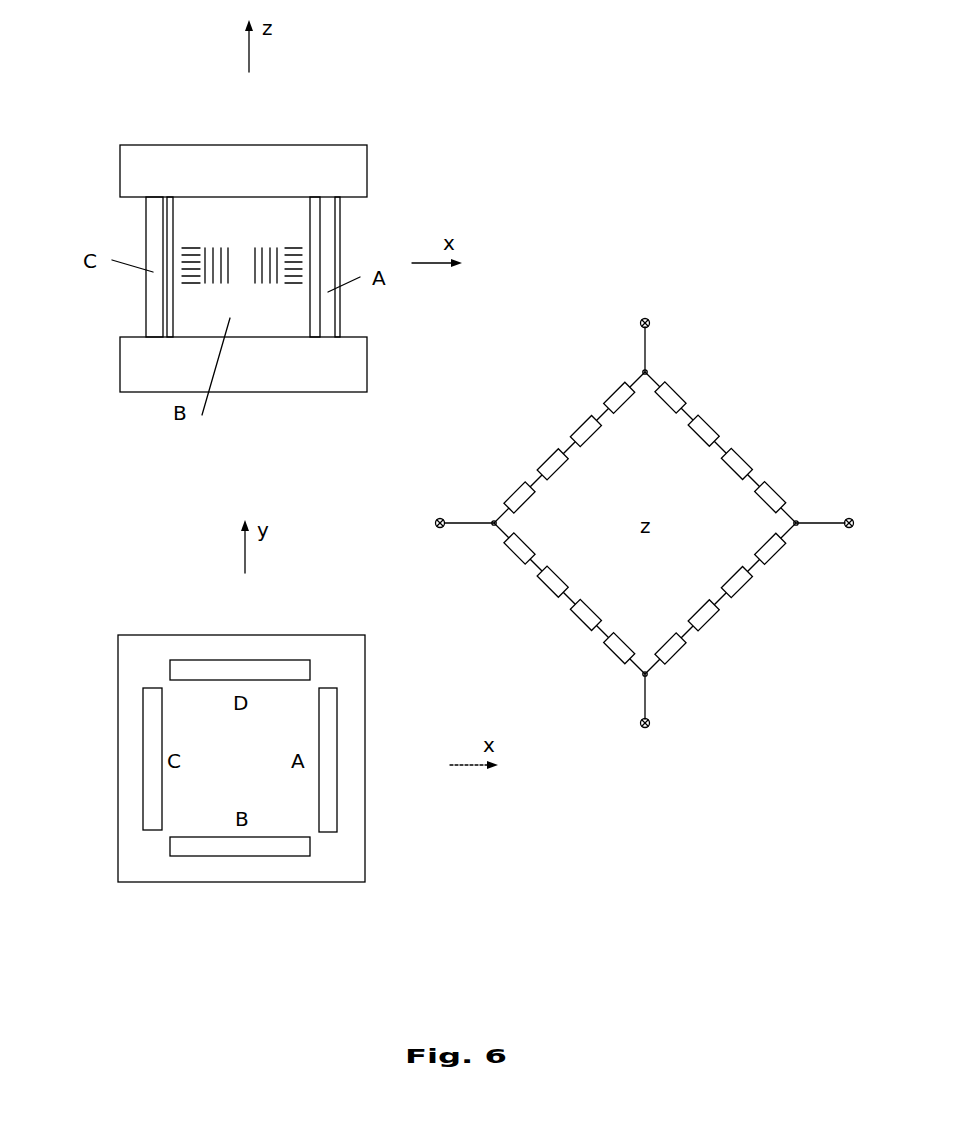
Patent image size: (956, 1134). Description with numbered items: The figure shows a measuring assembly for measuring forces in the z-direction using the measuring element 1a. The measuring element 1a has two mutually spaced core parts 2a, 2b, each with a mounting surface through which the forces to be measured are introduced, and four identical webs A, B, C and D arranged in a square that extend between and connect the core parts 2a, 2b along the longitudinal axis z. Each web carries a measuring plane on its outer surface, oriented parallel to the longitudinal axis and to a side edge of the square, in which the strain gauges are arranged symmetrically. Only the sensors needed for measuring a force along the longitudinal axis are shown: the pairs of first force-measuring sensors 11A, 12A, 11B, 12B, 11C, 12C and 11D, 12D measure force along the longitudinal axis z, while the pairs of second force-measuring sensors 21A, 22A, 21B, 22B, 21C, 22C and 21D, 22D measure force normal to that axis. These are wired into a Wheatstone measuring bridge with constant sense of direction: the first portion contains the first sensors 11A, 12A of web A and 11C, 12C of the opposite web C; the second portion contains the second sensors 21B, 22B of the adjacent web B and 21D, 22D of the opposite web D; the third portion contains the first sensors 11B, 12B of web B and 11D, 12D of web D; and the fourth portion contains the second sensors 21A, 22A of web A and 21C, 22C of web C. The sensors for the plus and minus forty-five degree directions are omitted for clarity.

The measuring element 1a is at (420, 98).
The core part 2a is at (208, 160).
The core part 2b is at (348, 363).
The first force-measuring sensor 11A is at (340, 778).
The first force-measuring sensor 11B is at (212, 248).
The first force-measuring sensor 11C is at (135, 778).
The first force-measuring sensor 11D is at (260, 648).
The first force-measuring sensor 12A is at (342, 740).
The first force-measuring sensor 12B is at (268, 248).
The first force-measuring sensor 12C is at (130, 731).
The first force-measuring sensor 12D is at (210, 648).
The second force-measuring sensor 21A is at (337, 805).
The second force-measuring sensor 21B is at (183, 248).
The second force-measuring sensor 21C is at (133, 805).
The second force-measuring sensor 21D is at (290, 648).
The second force-measuring sensor 22A is at (337, 707).
The second force-measuring sensor 22B is at (297, 248).
The second force-measuring sensor 22C is at (135, 705).
The second force-measuring sensor 22D is at (185, 648).